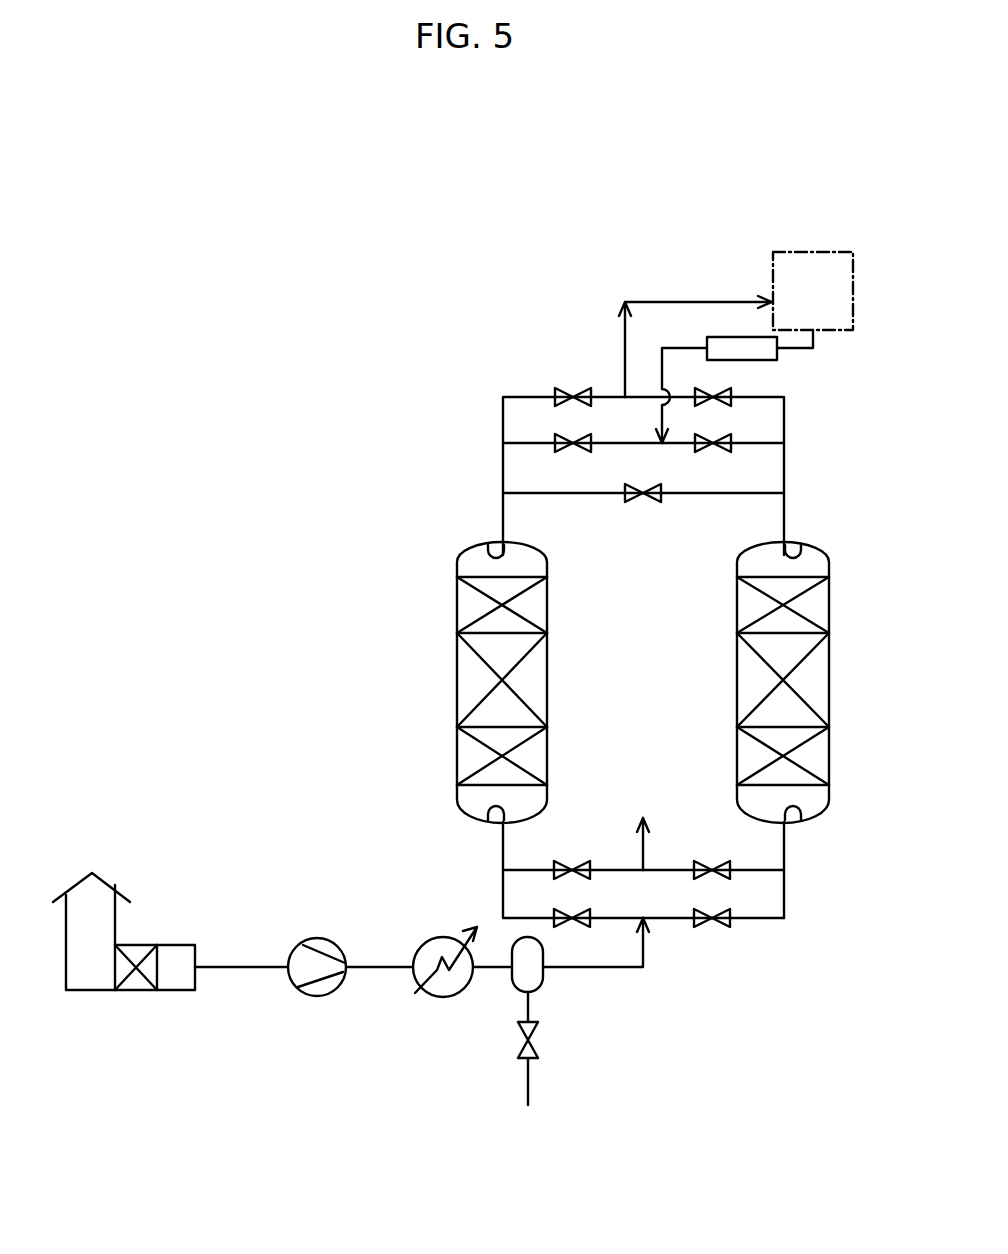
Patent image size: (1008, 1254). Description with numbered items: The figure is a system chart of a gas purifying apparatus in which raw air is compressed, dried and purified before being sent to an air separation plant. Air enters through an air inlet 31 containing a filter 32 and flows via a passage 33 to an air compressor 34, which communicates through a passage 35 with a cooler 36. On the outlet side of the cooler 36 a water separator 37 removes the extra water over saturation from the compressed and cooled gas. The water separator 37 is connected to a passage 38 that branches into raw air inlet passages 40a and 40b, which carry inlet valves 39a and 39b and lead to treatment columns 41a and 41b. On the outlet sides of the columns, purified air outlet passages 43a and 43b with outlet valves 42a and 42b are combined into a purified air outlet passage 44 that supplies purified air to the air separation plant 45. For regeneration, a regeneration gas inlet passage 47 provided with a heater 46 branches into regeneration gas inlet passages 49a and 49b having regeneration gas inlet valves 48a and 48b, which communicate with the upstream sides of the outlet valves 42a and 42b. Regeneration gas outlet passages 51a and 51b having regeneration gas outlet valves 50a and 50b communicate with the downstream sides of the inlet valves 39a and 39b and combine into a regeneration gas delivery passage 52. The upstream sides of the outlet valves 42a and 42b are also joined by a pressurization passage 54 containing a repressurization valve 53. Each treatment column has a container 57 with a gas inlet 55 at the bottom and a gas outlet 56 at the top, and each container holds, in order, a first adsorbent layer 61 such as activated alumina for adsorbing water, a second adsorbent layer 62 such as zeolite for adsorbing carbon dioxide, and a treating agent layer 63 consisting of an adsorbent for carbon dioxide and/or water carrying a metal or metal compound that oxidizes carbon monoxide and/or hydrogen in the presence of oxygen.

The air inlet 31 is at (114, 883).
The filter 32 is at (147, 945).
The passage 33 is at (240, 967).
The air compressor 34 is at (308, 938).
The passage 35 is at (378, 967).
The cooler 36 is at (433, 938).
The water separator 37 is at (518, 992).
The passage 38 is at (594, 968).
The inlet valve 39a is at (583, 913).
The inlet valve 39b is at (712, 925).
The raw air inlet passage 40a is at (503, 855).
The raw air inlet passage 40b is at (784, 857).
The treatment column 41a is at (447, 736).
The treatment column 41b is at (836, 710).
The outlet valve 42a is at (565, 388).
The outlet valve 42b is at (730, 391).
The purified air outlet passage 43a is at (502, 428).
The purified air outlet passage 43b is at (784, 418).
The purified air outlet passage 44 is at (670, 302).
The air separation plant 45 is at (783, 252).
The heater 46 is at (777, 355).
The regeneration gas inlet passage 47 is at (693, 348).
The regeneration gas inlet valve 48a is at (587, 453).
The regeneration gas inlet valve 48b is at (698, 451).
The regeneration gas inlet passage 49a is at (648, 443).
The regeneration gas inlet passage 49b is at (775, 442).
The regeneration gas outlet valve 50a is at (558, 862).
The regeneration gas outlet valve 50b is at (720, 862).
The regeneration gas outlet passage 51a is at (612, 870).
The regeneration gas outlet passage 51b is at (668, 868).
The regeneration gas delivery passage 52 is at (643, 852).
The repressurization valve 53 is at (633, 500).
The pressurization passage 54 is at (553, 495).
The gas inlet 55 is at (503, 805).
The gas outlet 56 is at (497, 552).
The container 57 is at (455, 668).
The first adsorbent layer 61 is at (533, 766).
The second adsorbent layer 62 is at (528, 684).
The treating agent layer 63 is at (533, 612).